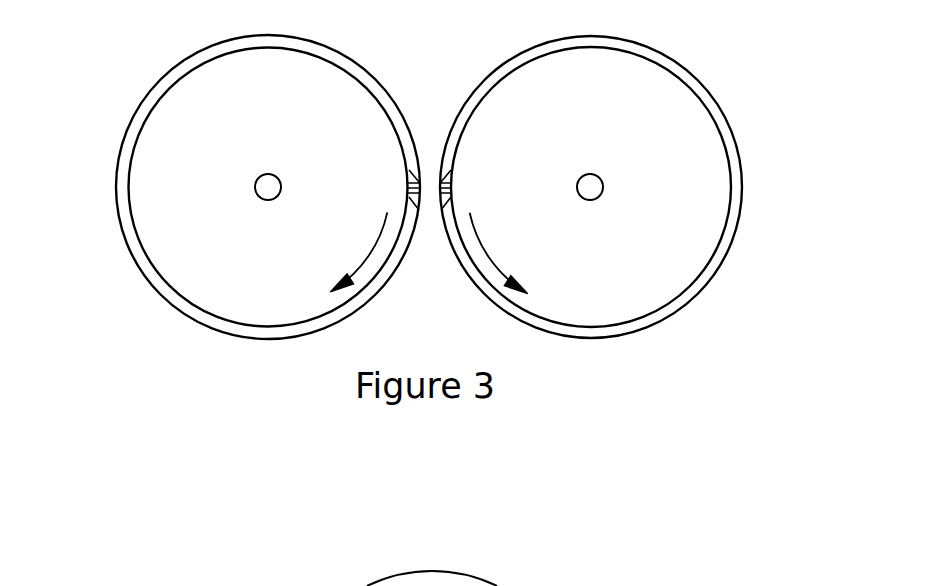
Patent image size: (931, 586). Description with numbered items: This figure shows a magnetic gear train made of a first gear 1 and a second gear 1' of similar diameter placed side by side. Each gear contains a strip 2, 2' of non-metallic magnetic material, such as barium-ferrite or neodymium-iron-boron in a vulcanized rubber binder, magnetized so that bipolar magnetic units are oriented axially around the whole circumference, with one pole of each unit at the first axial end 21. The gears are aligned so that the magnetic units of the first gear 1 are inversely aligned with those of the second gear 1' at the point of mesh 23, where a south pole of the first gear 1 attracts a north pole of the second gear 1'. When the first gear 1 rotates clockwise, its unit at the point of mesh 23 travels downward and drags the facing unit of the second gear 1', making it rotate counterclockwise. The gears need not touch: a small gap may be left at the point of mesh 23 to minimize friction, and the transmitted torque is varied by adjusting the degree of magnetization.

The first magnetic gear 1 is at (268, 173).
The second magnetic gear 1' is at (611, 187).
The strip of non-metallic magnetic material 2 is at (263, 209).
The strip of non-metallic magnetic material of second gear 2' is at (617, 187).
The first axial end 21 is at (140, 213).
The point of mesh 23 is at (429, 197).